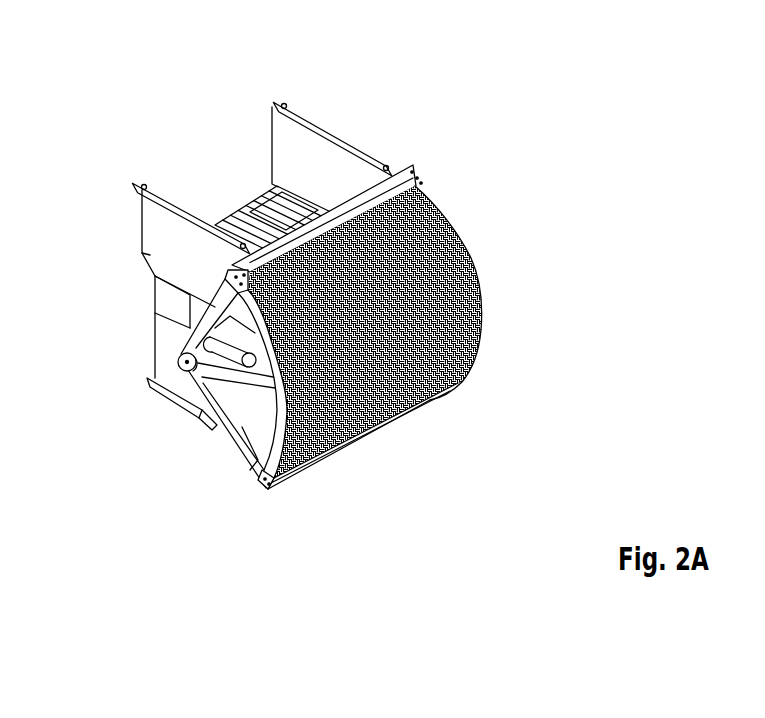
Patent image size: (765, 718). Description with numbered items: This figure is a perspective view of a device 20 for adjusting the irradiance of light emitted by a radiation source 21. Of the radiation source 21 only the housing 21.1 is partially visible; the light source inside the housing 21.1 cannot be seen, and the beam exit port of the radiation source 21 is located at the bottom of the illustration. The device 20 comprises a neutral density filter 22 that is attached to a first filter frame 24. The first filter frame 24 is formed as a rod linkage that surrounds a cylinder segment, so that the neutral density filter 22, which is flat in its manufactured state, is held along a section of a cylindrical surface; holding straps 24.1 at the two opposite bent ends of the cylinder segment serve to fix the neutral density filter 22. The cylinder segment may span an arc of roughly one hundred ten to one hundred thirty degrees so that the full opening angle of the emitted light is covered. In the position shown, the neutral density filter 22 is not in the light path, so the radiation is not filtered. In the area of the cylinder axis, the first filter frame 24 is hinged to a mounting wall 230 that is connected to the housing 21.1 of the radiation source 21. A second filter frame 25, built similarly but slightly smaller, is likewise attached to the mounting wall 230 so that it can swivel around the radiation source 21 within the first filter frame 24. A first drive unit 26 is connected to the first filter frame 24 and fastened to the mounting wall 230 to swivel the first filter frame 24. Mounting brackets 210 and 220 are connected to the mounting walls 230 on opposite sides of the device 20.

The device 20 is at (406, 37).
The mounting bracket 220 is at (279, 101).
The mounting bracket 210 is at (136, 183).
The radiation source 21 is at (125, 315).
The housing 21.1 is at (160, 325).
The holding straps 24.1 is at (443, 200).
The neutral density filter 22 is at (417, 333).
The second filter frame 25 is at (290, 444).
The first filter frame 24 is at (278, 464).
The first drive unit 26 is at (240, 362).
The mounting wall 230 is at (180, 382).